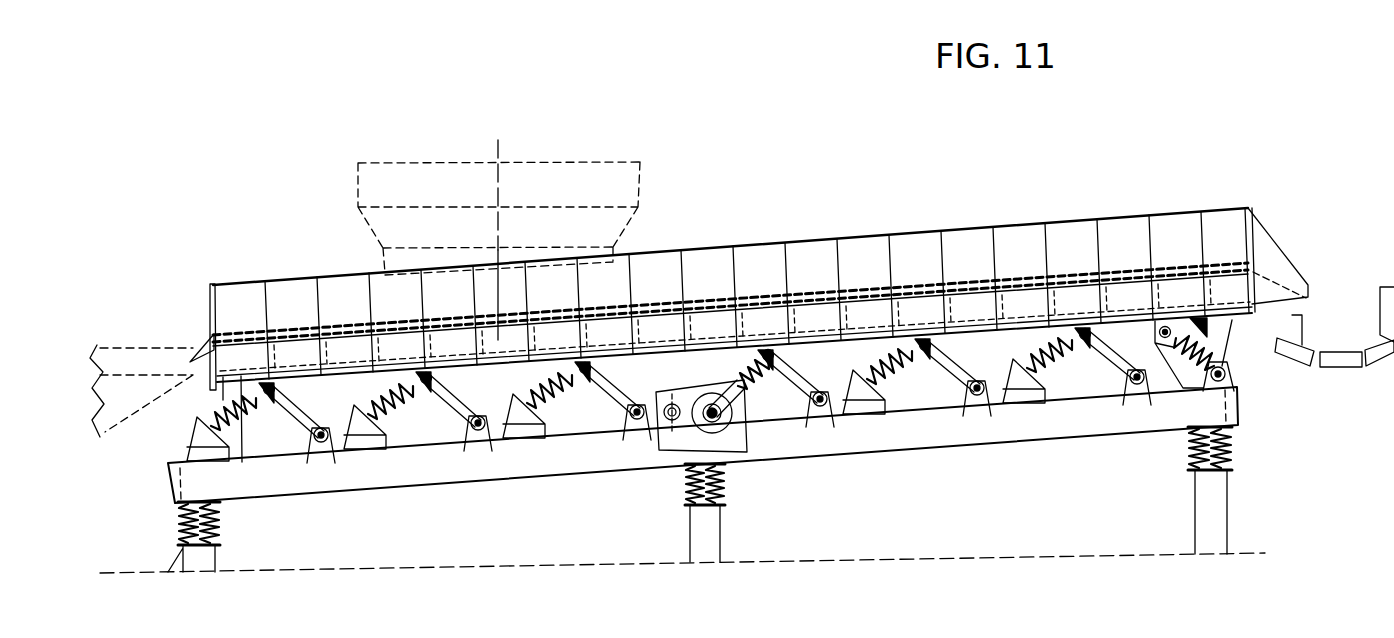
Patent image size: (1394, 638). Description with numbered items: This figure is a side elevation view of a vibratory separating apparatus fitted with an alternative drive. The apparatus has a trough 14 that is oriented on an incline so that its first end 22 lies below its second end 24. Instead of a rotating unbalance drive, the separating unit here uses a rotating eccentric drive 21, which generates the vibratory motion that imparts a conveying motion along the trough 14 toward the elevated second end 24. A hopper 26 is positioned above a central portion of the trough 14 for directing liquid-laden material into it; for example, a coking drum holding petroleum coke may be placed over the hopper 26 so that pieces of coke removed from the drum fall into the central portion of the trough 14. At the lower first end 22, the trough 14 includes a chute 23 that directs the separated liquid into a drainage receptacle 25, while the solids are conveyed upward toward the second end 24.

The trough 14 is at (1073, 237).
The rotating eccentric drive 21 is at (728, 432).
The first end 22 is at (213, 300).
The chute 23 is at (205, 347).
The second end 24 is at (1250, 212).
The drainage receptacle 25 is at (130, 408).
The hopper 26 is at (646, 153).